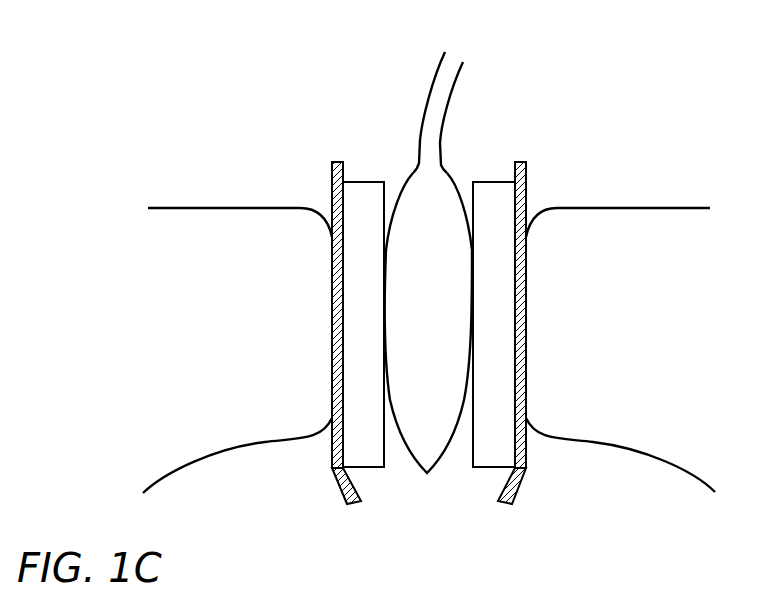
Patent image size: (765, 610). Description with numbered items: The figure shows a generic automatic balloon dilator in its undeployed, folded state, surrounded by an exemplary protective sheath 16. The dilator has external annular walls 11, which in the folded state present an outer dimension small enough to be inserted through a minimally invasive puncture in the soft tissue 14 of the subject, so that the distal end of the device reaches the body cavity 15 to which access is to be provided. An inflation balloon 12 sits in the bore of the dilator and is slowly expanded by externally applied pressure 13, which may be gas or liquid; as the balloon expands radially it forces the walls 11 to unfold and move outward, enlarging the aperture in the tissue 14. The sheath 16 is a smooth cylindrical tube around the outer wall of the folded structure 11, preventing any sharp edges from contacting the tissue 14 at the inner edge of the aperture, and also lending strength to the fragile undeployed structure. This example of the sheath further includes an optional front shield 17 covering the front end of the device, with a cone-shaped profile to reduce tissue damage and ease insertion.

The external annular walls 11 is at (367, 181).
The inflation balloon 12 is at (428, 475).
The externally applied pressure 13 is at (458, 49).
The soft tissue 14 is at (266, 350).
The body cavity 15 is at (410, 580).
The sheath 16 is at (332, 172).
The front shield 17 is at (343, 489).